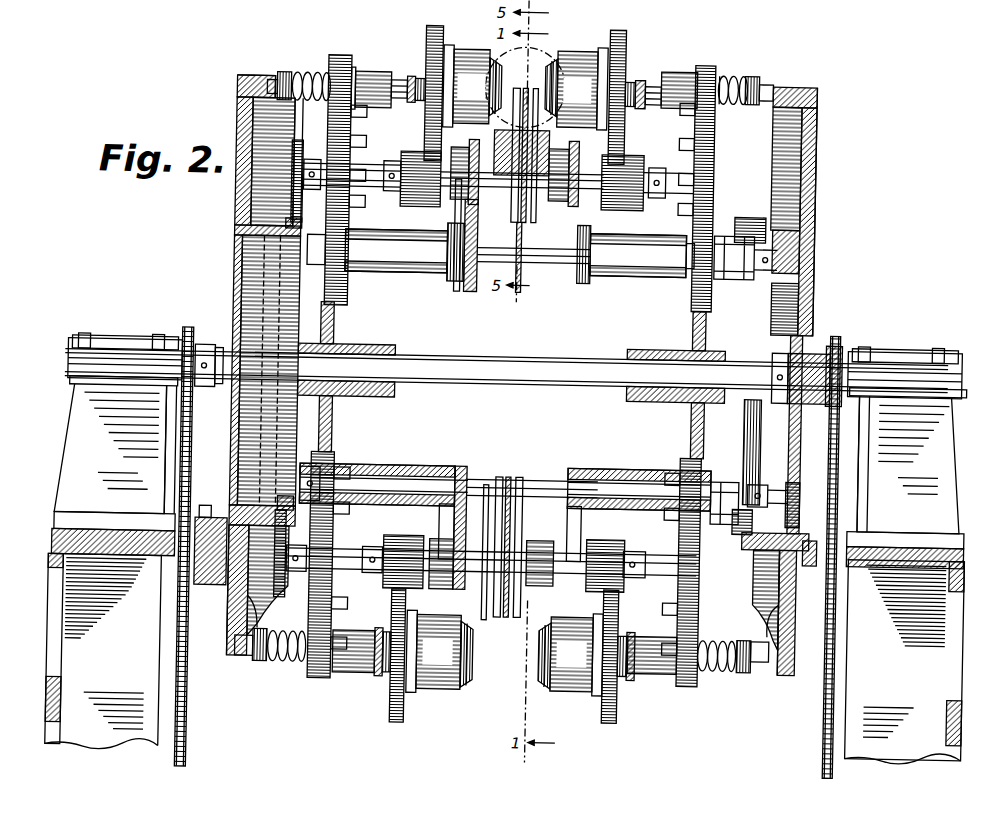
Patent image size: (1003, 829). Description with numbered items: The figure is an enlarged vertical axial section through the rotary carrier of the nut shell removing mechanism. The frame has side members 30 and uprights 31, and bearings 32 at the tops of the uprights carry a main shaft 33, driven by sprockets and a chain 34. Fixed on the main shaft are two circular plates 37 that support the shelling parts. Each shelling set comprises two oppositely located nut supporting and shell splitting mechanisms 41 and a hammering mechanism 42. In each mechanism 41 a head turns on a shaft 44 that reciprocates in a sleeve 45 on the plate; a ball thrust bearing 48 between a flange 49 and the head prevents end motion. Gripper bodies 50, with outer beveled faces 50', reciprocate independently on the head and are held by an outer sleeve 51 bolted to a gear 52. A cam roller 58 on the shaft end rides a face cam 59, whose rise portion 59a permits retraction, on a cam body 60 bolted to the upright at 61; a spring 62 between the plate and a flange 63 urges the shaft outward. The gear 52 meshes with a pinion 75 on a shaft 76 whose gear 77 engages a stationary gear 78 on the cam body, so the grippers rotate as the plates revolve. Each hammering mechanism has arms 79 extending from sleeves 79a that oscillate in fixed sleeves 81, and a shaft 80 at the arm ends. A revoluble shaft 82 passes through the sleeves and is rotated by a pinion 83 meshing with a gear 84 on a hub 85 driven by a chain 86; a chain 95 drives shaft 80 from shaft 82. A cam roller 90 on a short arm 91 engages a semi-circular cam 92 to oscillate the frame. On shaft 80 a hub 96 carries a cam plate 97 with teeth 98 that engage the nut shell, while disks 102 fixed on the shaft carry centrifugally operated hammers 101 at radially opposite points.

The side member 30 is at (60, 640).
The upright 31 is at (85, 520).
The bearing 32 is at (118, 345).
The main shaft 33 is at (560, 357).
The chain 34 is at (195, 735).
The circular plate 37 is at (334, 323).
The nut supporting and shell splitting mechanism 41 is at (454, 38).
The hammering mechanism 42 is at (546, 211).
The shaft 44 is at (392, 82).
The sleeve 45 is at (366, 74).
The ball thrust bearing 48 is at (414, 80).
The flange 49 is at (406, 78).
The gripper body 50 is at (522, 378).
The outer beveled face 50' is at (519, 373).
The outer sleeve 51 is at (510, 370).
The gear 52 is at (430, 27).
The cam roller 58 is at (270, 84).
The face cam 59 is at (265, 82).
The rise portion of cam 59a is at (252, 608).
The cam body 60 is at (240, 213).
The bolt 61 is at (208, 511).
The spring 62 is at (305, 76).
The flange 63 is at (279, 76).
The pinion 75 is at (410, 156).
The pinion shaft 76 is at (436, 190).
The gear 77 is at (293, 144).
The stationary gear 78 is at (285, 225).
The arm 79 is at (446, 260).
The sleeve 79a is at (428, 467).
The shaft 80 is at (560, 188).
The fixed sleeve 81 is at (406, 274).
The revoluble shaft 82 is at (490, 262).
The pinion 83 is at (797, 245).
The gear 84 is at (797, 302).
The hub 85 is at (832, 345).
The chain 86 is at (830, 724).
The cam roller 90 is at (748, 213).
The short arm 91 is at (722, 245).
The semi-circular cam 92 is at (758, 462).
The chain 95 is at (476, 232).
The hub 96 is at (538, 150).
The cam plate 97 is at (516, 222).
The teeth 98 is at (508, 214).
The centrifugally operated hammer 101 is at (512, 90).
The disk 102 is at (482, 140).